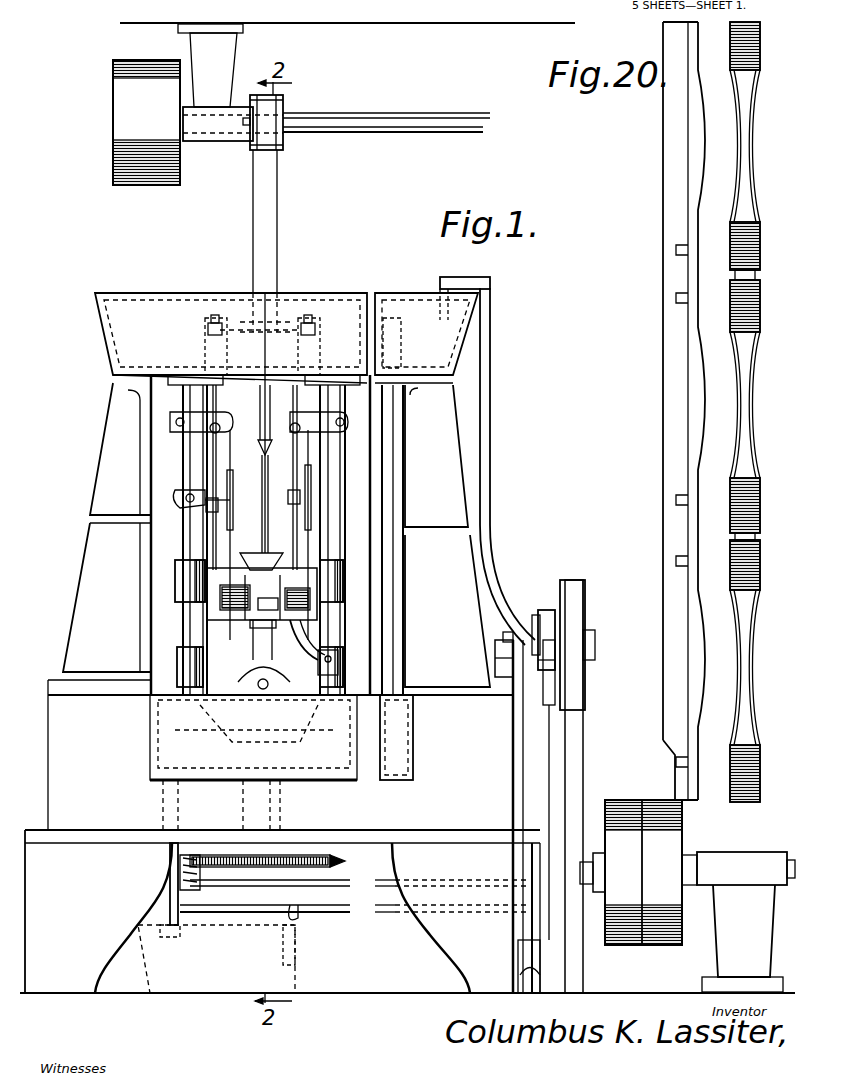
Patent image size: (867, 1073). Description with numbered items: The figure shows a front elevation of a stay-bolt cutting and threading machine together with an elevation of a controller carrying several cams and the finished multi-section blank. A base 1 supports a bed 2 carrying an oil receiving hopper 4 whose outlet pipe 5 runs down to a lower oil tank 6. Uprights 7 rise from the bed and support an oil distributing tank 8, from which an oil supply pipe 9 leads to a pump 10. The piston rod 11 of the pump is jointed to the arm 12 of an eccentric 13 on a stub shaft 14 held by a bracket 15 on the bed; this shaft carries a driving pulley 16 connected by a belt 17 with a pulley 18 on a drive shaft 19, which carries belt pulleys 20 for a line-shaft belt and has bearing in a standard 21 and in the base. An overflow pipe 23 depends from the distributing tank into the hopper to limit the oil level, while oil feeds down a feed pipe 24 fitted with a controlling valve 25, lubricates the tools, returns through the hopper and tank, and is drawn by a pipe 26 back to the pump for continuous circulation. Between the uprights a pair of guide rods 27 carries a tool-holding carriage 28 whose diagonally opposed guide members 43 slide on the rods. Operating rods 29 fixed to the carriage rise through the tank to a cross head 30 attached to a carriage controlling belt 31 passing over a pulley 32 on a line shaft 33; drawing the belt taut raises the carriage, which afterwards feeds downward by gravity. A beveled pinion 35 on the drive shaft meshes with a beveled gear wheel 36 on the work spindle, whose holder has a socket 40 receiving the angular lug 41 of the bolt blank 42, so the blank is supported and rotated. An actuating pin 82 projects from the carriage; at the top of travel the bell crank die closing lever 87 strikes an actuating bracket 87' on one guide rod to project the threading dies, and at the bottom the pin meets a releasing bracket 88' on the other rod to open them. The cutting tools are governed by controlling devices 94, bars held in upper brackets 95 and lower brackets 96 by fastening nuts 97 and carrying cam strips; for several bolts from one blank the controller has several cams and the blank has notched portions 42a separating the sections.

In FIG. 1, the base 1 is at (407, 911).
In FIG. 1, the bed 2 is at (202, 755).
In FIG. 1, the oil receiving hopper 4 is at (405, 732).
In FIG. 1, the outlet pipe 5 is at (168, 912).
In FIG. 1, the lower oil tank 6 is at (216, 959).
In FIG. 1, the uprights 7 is at (280, 535).
In FIG. 1, the oil distributing tank 8 is at (335, 310).
In FIG. 1, the oil supply pipe 9 is at (492, 400).
In FIG. 1, the pump 10 is at (542, 966).
In FIG. 1, the piston rod 11 is at (513, 789).
In FIG. 1, the arm 12 is at (555, 723).
In FIG. 1, the eccentric 13 is at (550, 610).
In FIG. 1, the stub shaft 14 is at (533, 615).
In FIG. 1, the bracket 15 is at (495, 660).
In FIG. 1, the driving pulley 16 is at (586, 598).
In FIG. 1, the belt 17 is at (583, 760).
In FIG. 1, the pulley 18 is at (594, 862).
In FIG. 1, the drive shaft 19 is at (585, 884).
In FIG. 1, the belt pulleys 20 is at (660, 800).
In FIG. 1, the standard 21 is at (738, 922).
In FIG. 1, the overflow pipe 23 is at (382, 483).
In FIG. 1, the feed pipe 24 is at (260, 400).
In FIG. 1, the controlling valve 25 is at (262, 448).
In FIG. 1, the pipe 26 is at (340, 915).
In FIG. 1, the guide rods 27 is at (183, 468).
In FIG. 1, the tool-holding carriage 28 is at (260, 552).
In FIG. 1, the operating rods 29 is at (210, 432).
In FIG. 1, the cross head 30 is at (226, 296).
In FIG. 1, the carriage controlling belt 31 is at (265, 225).
In FIG. 1, the pulley 32 is at (285, 150).
In FIG. 1, the line shaft 33 is at (462, 135).
In FIG. 1, the beveled pinion 35 is at (198, 892).
In FIG. 1, the beveled gear wheel 36 is at (258, 870).
In FIG. 1, the socket 40 is at (300, 625).
In FIG. 1, the angular lug 41 is at (250, 672).
In FIG. 1, the bolt blank 42 is at (253, 637).
In FIG. 20, the notched or reduced portions 42a is at (736, 278).
In FIG. 1, the guide members 43 is at (175, 577).
In FIG. 1, the actuating pin 82 is at (317, 575).
In FIG. 1, the bell crank die closing lever 87 is at (224, 535).
In FIG. 1, the actuating bracket 87' is at (137, 521).
In FIG. 1, the releasing bracket 88' is at (335, 601).
In FIG. 1, the controlling devices 94 is at (206, 510).
In FIG. 1, the upper brackets 95 is at (172, 416).
In FIG. 1, the lower brackets 96 is at (232, 736).
In FIG. 1, the fastening nuts 97 is at (292, 420).